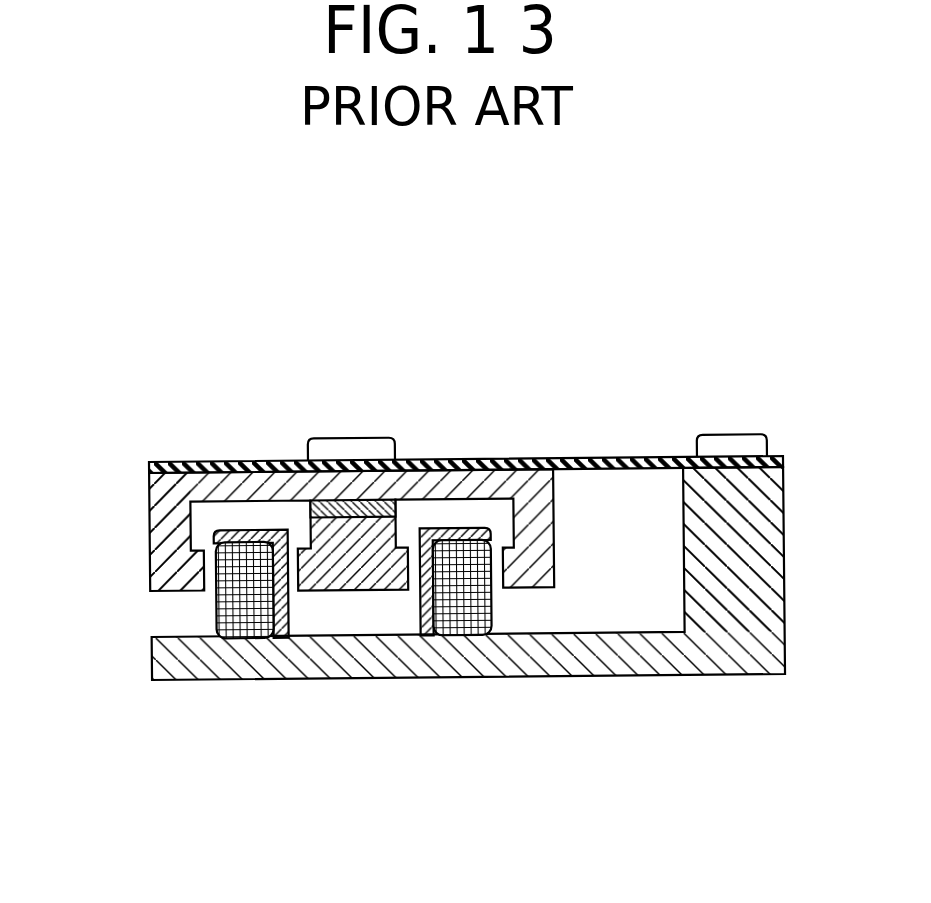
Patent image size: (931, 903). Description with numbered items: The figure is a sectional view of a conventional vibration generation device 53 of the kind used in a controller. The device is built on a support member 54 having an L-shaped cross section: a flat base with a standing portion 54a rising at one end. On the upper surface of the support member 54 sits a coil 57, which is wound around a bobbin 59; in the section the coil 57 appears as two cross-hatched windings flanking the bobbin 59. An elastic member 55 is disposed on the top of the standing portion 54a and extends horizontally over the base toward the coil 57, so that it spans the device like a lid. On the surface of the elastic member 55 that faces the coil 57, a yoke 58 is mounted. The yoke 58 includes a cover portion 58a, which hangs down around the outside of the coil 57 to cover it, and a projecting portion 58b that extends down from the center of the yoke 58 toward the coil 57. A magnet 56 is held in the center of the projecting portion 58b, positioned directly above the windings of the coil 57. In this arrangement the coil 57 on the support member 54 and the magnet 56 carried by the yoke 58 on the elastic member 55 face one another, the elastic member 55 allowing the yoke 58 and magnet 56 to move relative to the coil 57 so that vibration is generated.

The vibration generation device 53 is at (505, 438).
The support member 54 is at (525, 614).
The standing portion 54a is at (770, 545).
The elastic member 55 is at (633, 462).
The magnet 56 is at (306, 512).
The coil 57 is at (250, 628).
The yoke 58 is at (289, 479).
The cover portion 58a is at (150, 545).
The projecting portion 58b is at (348, 526).
The bobbin 59 is at (430, 617).